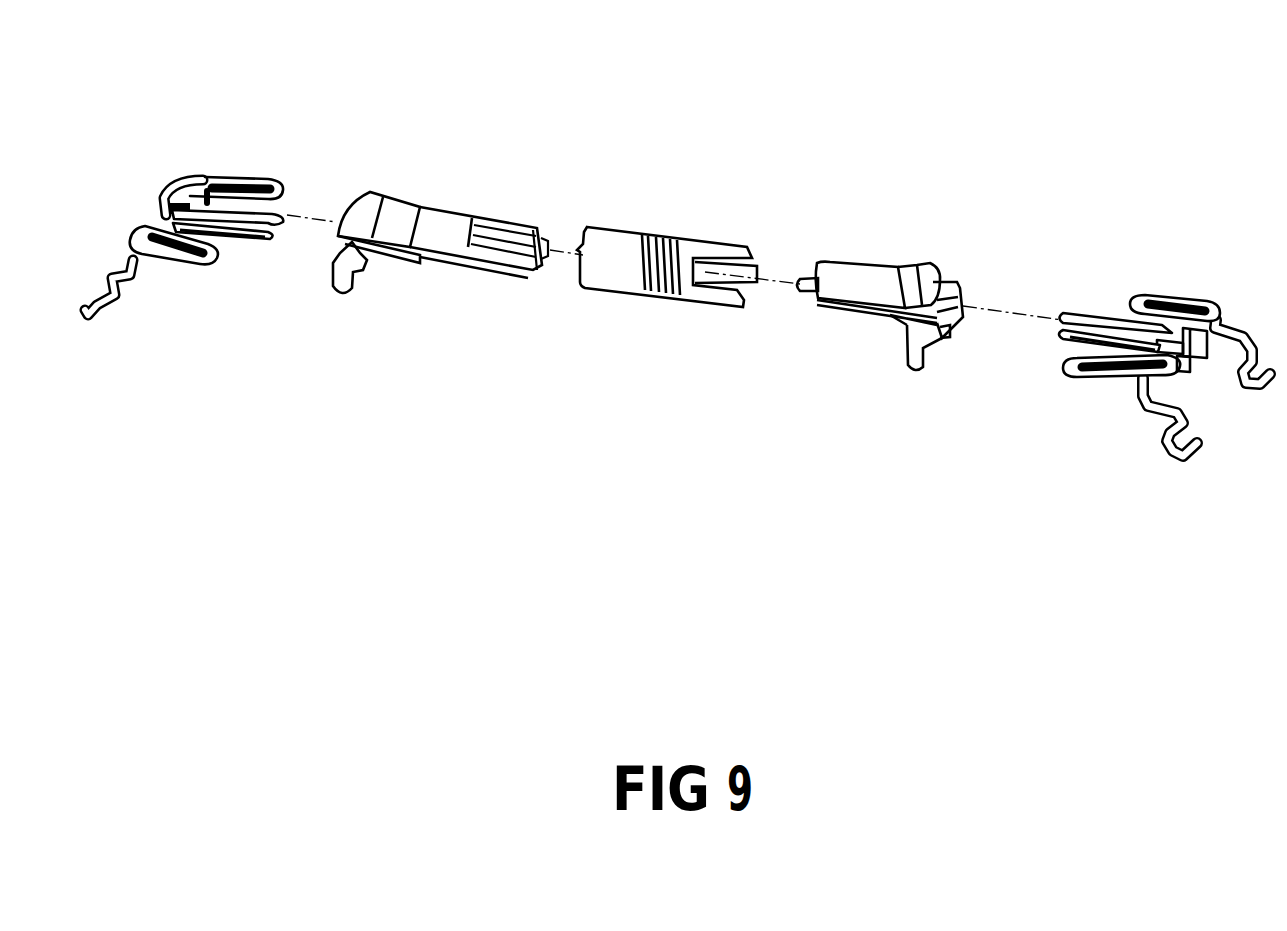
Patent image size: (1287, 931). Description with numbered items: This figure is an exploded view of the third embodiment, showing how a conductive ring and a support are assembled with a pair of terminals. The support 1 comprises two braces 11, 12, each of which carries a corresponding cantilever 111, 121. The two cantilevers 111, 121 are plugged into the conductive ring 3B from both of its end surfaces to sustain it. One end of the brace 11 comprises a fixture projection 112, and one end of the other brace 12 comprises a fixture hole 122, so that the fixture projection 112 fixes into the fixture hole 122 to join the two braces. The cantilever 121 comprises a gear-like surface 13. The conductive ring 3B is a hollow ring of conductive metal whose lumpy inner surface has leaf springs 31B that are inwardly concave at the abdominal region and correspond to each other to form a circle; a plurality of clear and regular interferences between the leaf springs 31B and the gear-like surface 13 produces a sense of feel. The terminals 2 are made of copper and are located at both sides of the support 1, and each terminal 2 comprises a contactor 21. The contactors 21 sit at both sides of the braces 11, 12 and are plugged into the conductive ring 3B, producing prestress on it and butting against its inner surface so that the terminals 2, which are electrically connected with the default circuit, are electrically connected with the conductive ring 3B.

The support 1 is at (858, 218).
The terminal 2 is at (148, 172).
The contactor 21 is at (258, 240).
The brace 11 is at (903, 228).
The cantilever 111 is at (868, 292).
The fixture projection 112 is at (807, 292).
The brace 12 is at (420, 180).
The cantilever 121 is at (450, 238).
The fixture hole 122 is at (562, 228).
The gear-like surface 13 is at (503, 242).
The conductive ring 3B is at (690, 328).
The leaf spring 31B is at (648, 292).